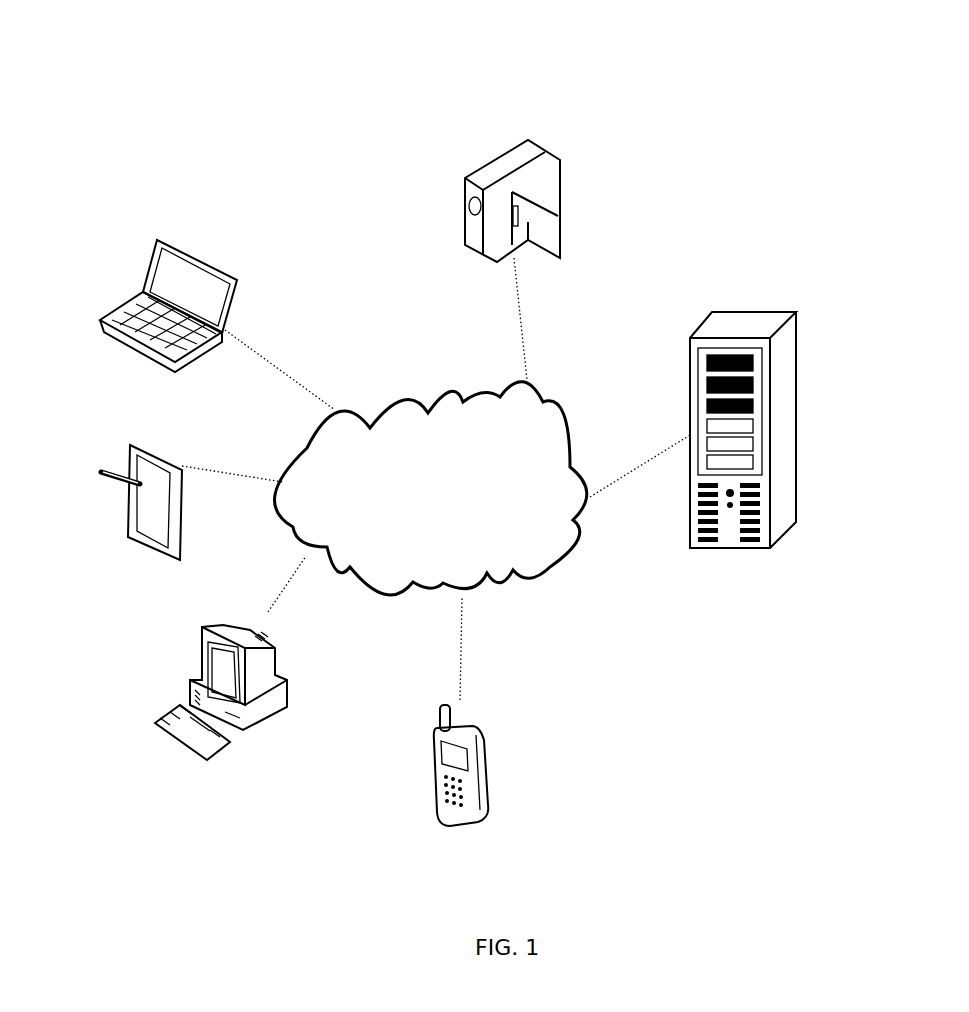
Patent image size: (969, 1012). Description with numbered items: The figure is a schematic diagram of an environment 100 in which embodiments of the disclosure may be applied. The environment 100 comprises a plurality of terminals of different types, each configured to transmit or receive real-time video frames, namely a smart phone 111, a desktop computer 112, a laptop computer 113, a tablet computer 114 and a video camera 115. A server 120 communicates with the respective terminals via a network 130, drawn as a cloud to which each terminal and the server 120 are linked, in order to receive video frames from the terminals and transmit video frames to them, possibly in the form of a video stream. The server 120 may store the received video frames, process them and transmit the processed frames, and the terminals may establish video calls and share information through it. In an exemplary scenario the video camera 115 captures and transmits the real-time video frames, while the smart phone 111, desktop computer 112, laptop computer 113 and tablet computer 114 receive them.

The environment 100 is at (643, 34).
The smart phone 111 is at (478, 822).
The desktop computer 112 is at (207, 758).
The laptop computer 113 is at (136, 356).
The tablet computer 114 is at (137, 545).
The video camera 115 is at (505, 150).
The server 120 is at (783, 312).
The network 130 is at (436, 479).